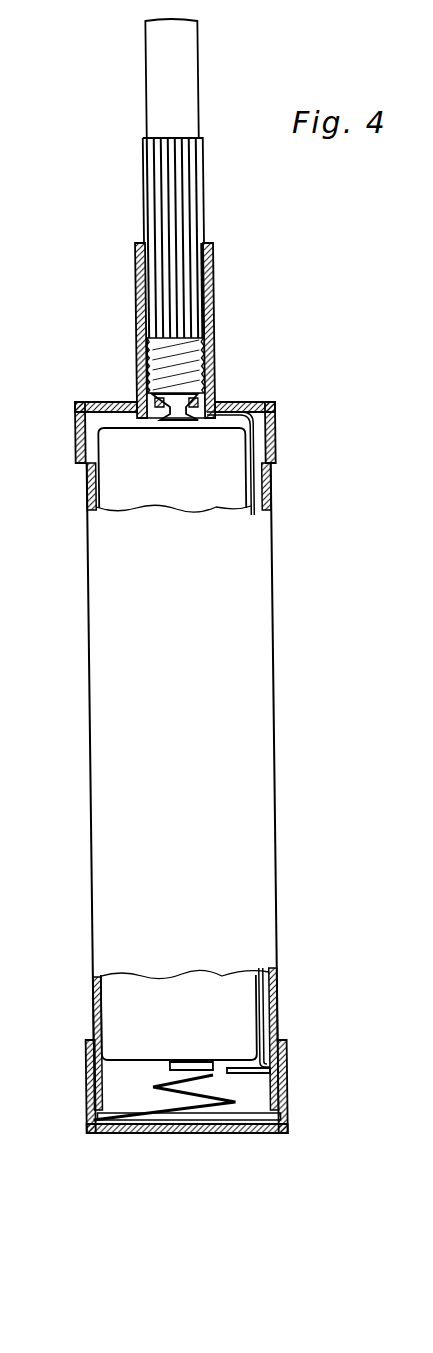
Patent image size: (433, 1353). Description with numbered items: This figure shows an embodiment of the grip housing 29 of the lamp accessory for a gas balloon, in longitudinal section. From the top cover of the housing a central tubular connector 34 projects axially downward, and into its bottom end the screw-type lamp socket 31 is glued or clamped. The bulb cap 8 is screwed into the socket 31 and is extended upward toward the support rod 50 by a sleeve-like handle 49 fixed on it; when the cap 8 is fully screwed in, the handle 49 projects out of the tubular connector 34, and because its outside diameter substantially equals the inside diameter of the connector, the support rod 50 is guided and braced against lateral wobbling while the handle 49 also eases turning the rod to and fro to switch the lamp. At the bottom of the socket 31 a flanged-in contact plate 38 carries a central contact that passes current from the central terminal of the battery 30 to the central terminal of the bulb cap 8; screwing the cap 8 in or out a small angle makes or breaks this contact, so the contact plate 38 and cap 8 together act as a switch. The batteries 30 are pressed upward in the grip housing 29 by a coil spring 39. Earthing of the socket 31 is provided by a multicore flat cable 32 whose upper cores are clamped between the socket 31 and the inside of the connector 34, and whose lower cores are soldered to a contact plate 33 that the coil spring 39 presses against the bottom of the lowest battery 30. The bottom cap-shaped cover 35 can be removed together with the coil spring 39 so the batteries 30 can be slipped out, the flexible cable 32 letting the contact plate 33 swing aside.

The support rod 50 is at (186, 66).
The sleeve-like handle 49 is at (208, 187).
The tubular connector 34 is at (214, 290).
The screw-type lamp socket 31 is at (204, 357).
The bulb cap 8 is at (138, 372).
The contact plate 38 is at (140, 394).
The multicore flat cable 32 is at (252, 412).
The battery 30 is at (237, 490).
The grip housing 29 is at (268, 560).
The bottom cap-shaped cover 35 is at (277, 1068).
The contact plate 33 is at (195, 1060).
The coil spring 39 is at (142, 1083).